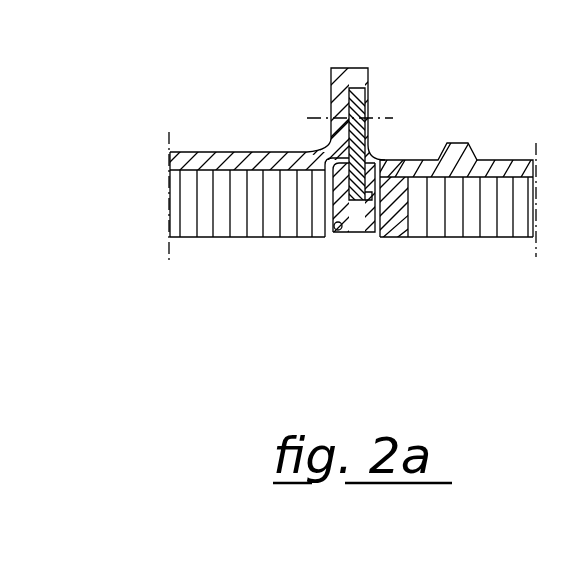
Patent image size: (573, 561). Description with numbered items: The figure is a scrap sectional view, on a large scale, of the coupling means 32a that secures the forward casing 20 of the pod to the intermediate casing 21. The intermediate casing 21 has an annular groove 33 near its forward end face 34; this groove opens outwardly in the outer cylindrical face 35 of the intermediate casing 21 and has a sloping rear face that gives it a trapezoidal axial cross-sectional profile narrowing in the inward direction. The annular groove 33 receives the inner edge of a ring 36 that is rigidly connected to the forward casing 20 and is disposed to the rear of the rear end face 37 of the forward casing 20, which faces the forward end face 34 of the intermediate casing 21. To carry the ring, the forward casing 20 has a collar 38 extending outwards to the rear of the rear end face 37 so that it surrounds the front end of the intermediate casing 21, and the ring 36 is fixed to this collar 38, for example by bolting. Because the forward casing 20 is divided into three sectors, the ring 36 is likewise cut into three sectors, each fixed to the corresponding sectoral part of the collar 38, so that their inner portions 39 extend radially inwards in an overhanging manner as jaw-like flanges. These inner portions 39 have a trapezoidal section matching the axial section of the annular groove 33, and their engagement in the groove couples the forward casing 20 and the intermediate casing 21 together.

The forward casing 20 is at (188, 197).
The intermediate casing 21 is at (503, 220).
The coupling means 32a is at (360, 237).
The annular groove 33 is at (392, 192).
The forward end face 34 is at (372, 198).
The outer cylindrical face 35 is at (413, 172).
The ring 36 is at (370, 98).
The rear end face 37 is at (328, 196).
The collar 38 is at (335, 92).
The inner portions 39 is at (355, 223).